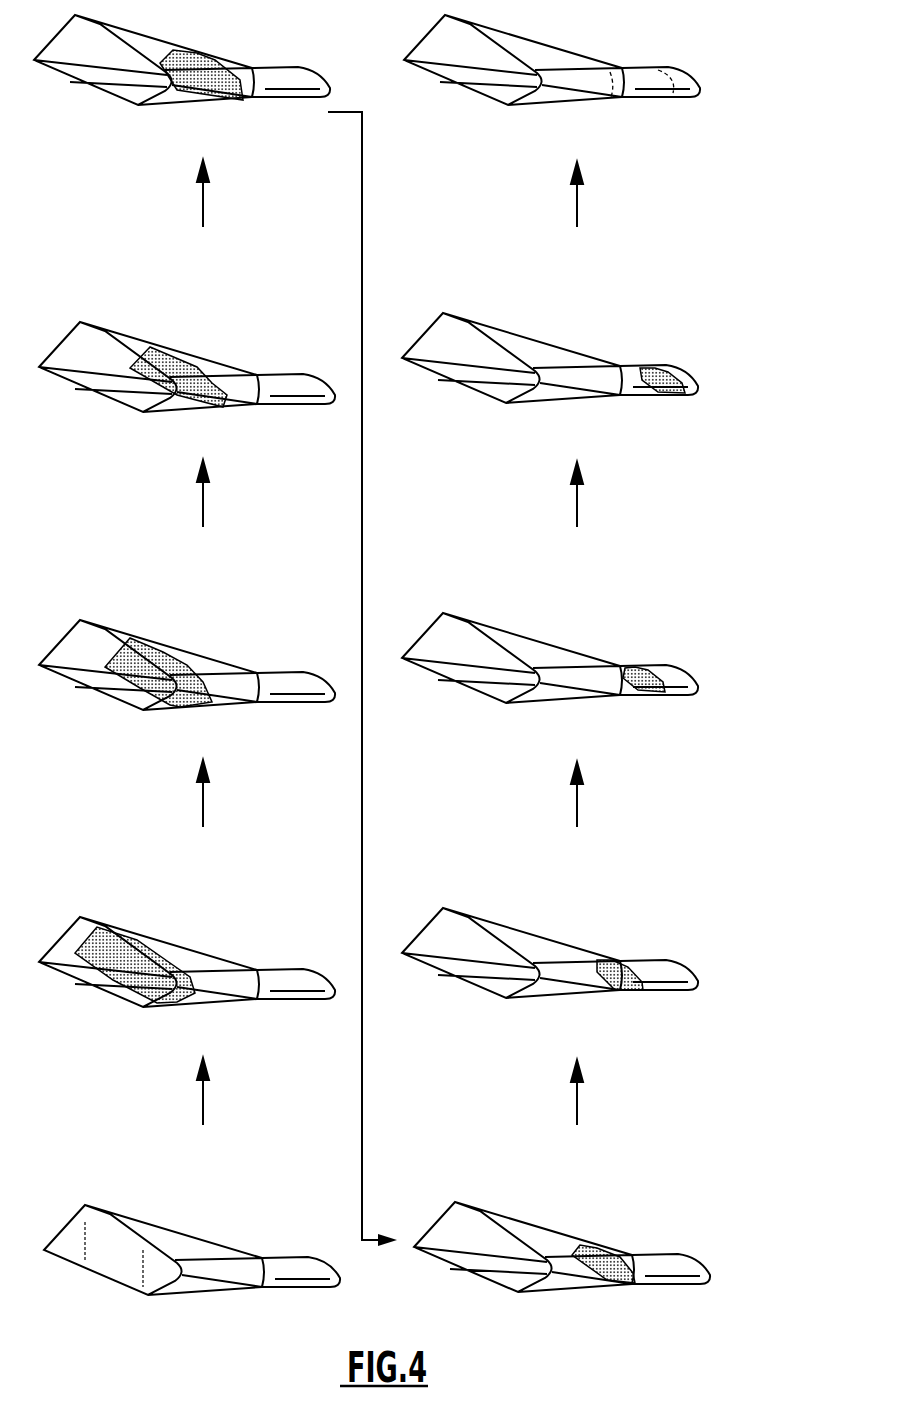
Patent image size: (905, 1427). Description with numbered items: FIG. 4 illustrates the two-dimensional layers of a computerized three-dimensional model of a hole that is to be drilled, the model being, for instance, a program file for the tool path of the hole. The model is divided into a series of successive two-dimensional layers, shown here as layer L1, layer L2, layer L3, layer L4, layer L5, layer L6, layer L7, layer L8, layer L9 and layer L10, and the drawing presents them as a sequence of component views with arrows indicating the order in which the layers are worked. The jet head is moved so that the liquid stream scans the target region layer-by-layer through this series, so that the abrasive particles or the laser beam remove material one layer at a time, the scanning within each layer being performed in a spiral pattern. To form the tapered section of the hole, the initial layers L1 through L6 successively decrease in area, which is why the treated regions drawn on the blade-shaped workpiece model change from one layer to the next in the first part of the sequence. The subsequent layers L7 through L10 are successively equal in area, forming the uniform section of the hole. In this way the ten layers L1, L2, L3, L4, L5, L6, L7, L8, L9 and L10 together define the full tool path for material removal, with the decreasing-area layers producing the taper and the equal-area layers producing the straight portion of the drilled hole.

The layer L1 is at (108, 1257).
The layer L2 is at (127, 977).
The layer L3 is at (140, 677).
The layer L4 is at (212, 405).
The layer L5 is at (223, 93).
The layer L6 is at (600, 1270).
The layer L7 is at (615, 990).
The layer L8 is at (640, 693).
The layer L9 is at (658, 393).
The layer L10 is at (697, 97).